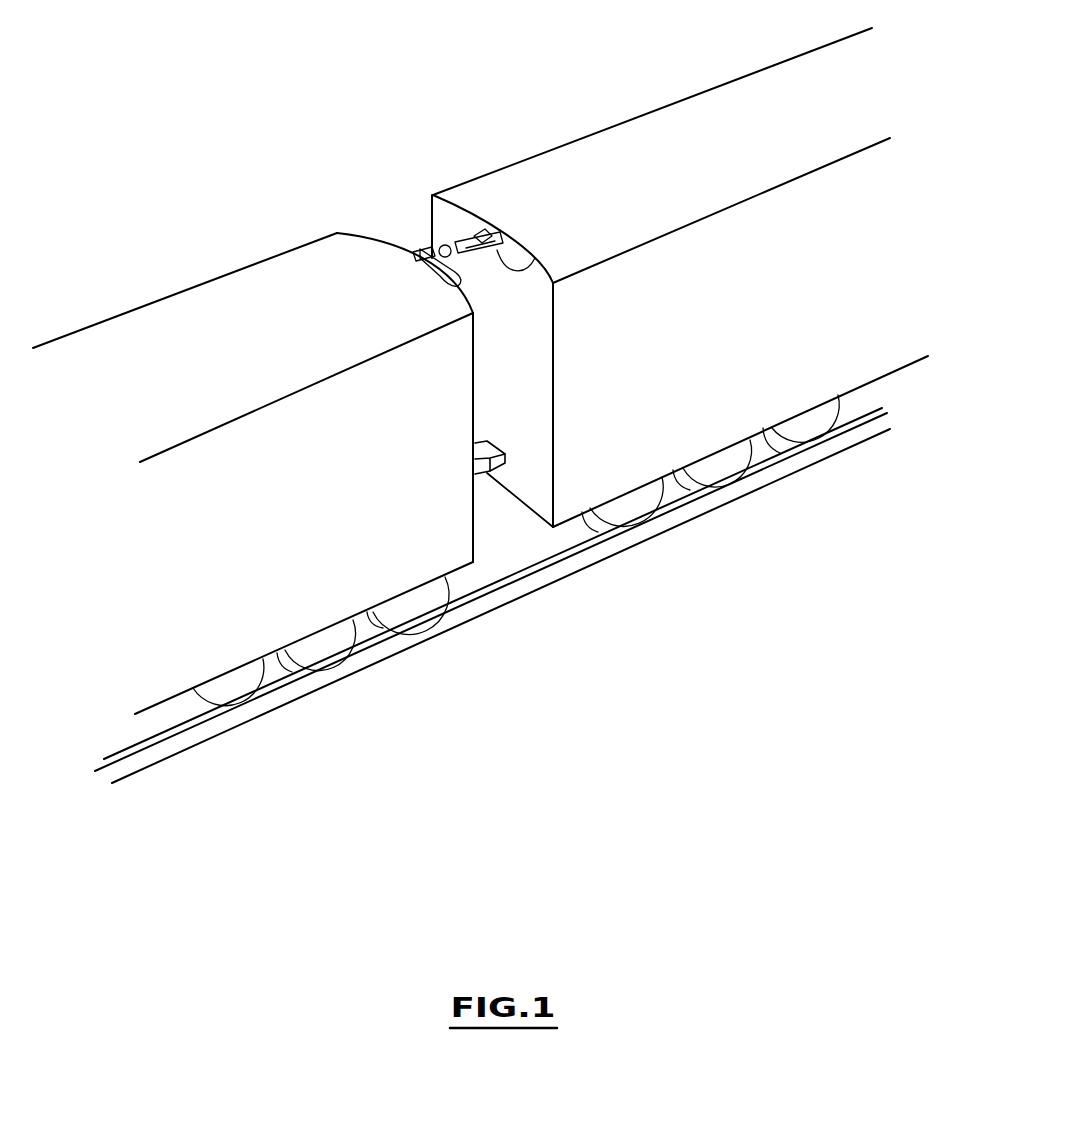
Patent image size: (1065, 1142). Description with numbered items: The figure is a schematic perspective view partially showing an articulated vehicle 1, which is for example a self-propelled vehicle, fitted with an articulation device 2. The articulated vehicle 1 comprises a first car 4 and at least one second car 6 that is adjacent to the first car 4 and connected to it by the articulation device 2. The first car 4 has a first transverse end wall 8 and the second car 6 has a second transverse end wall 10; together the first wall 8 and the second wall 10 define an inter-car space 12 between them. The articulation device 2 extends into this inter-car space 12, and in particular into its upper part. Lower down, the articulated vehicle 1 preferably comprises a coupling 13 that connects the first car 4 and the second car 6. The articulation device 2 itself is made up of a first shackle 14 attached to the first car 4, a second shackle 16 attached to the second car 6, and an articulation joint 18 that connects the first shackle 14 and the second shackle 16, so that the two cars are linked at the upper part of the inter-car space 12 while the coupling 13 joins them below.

The articulated vehicle 1 is at (240, 117).
The articulation device 2 is at (382, 203).
The first car 4 is at (312, 258).
The second car 6 is at (710, 122).
The first transverse end wall 8 is at (367, 233).
The second transverse end wall 10 is at (440, 215).
The inter-car space 12 is at (500, 507).
The coupling 13 is at (477, 458).
The first shackle 14 is at (445, 287).
The second shackle 16 is at (535, 258).
The articulation joint 18 is at (477, 260).